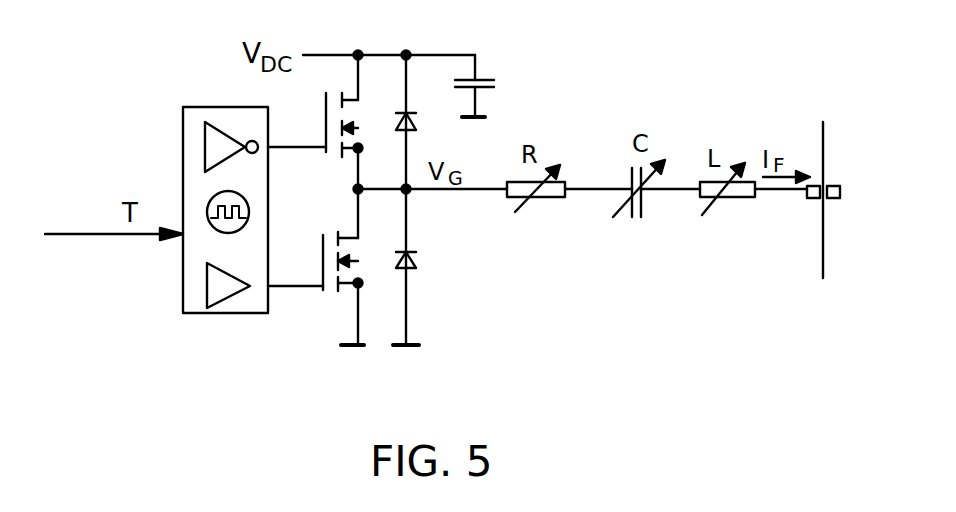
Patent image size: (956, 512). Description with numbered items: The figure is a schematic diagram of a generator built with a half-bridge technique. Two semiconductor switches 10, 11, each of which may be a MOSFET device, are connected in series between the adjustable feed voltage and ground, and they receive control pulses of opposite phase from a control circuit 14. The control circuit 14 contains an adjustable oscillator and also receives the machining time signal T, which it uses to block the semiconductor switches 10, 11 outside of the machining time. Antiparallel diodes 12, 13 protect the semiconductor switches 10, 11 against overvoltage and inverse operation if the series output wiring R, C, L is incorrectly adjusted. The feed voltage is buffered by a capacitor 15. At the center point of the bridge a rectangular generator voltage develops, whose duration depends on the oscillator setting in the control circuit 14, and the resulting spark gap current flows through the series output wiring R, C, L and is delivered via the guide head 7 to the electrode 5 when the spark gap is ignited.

The control circuit 14 is at (196, 112).
The semiconductor switch 10 is at (333, 93).
The semiconductor switch 11 is at (332, 288).
The antiparallel diode 12 is at (397, 110).
The antiparallel diode 13 is at (412, 272).
The capacitor 15 is at (483, 80).
The electrode 5 is at (822, 150).
The guide head 7 is at (840, 187).